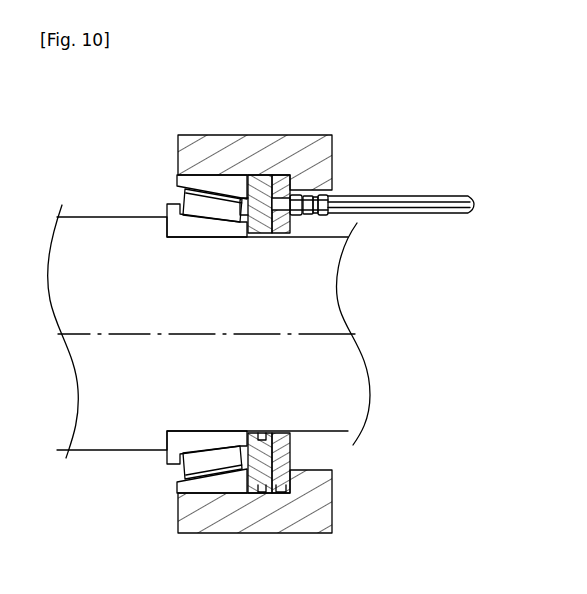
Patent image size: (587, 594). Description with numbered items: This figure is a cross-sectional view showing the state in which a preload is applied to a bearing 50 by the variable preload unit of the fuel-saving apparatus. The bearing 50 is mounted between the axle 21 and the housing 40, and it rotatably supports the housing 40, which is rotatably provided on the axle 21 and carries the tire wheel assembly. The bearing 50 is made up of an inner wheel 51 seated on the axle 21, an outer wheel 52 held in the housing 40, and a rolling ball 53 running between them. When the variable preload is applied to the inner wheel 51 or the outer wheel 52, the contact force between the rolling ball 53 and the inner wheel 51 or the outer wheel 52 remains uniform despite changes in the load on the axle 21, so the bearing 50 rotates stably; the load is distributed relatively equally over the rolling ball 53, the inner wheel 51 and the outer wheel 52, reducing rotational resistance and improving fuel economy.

The axle 21 is at (122, 438).
The housing 40 is at (255, 148).
The bearing 50 is at (170, 80).
The inner wheel 51 is at (172, 222).
The outer wheel 52 is at (208, 178).
The rolling ball 53 is at (198, 203).